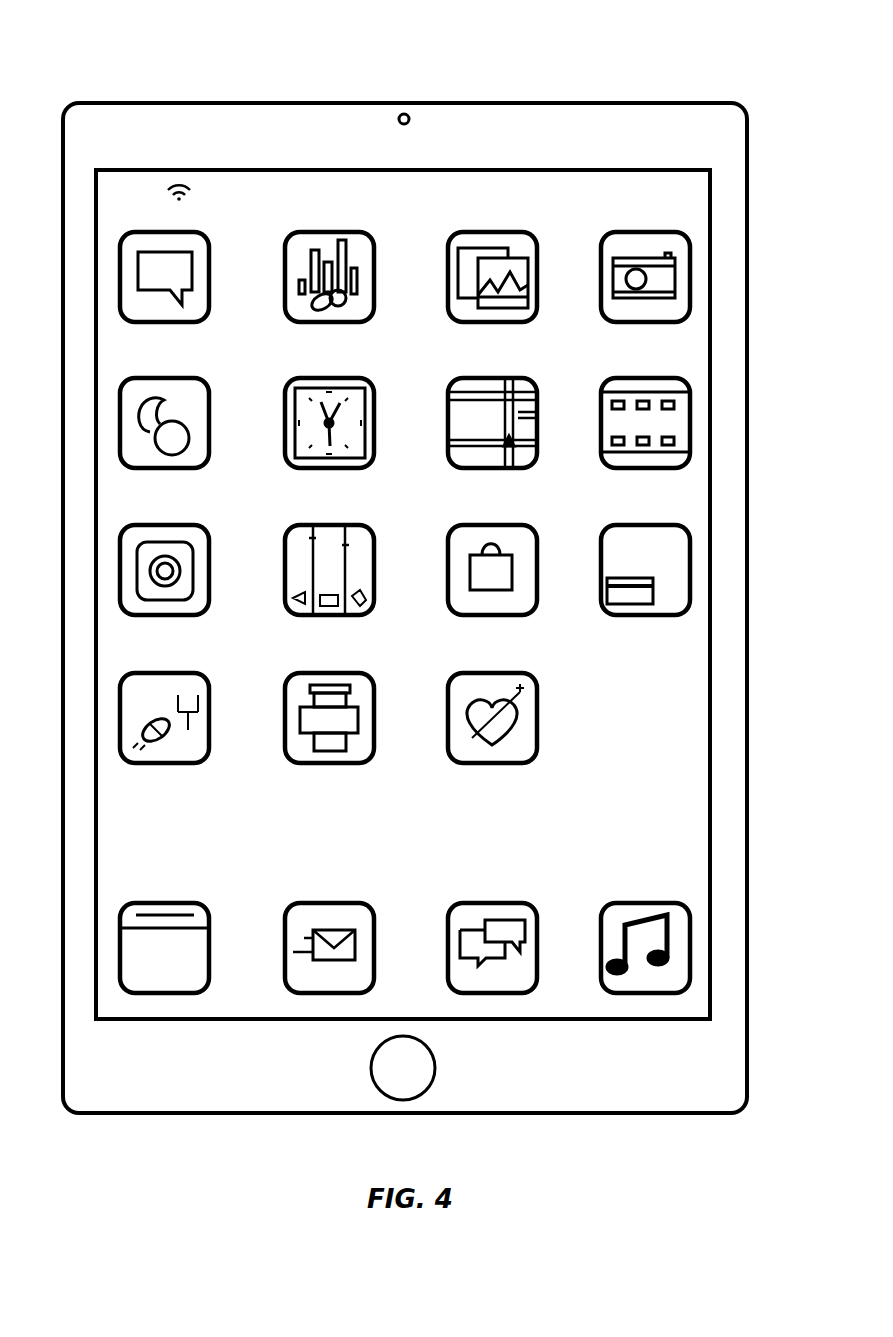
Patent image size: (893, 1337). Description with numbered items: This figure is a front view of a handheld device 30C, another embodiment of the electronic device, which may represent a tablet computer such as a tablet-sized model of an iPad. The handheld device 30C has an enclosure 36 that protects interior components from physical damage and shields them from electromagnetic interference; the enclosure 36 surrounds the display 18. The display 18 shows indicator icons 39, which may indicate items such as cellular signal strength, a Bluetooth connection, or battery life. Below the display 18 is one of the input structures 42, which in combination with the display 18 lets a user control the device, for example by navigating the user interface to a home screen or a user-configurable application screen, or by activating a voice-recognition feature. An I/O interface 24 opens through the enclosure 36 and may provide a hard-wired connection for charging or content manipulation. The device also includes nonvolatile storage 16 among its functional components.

The handheld device 30C is at (76, 66).
The nonvolatile storage 16 is at (162, 102).
The enclosure 36 is at (664, 102).
The indicator icons 39 is at (418, 220).
The display 18 is at (722, 767).
The input structures 42 is at (436, 1068).
The I/O interface 24 is at (405, 1114).